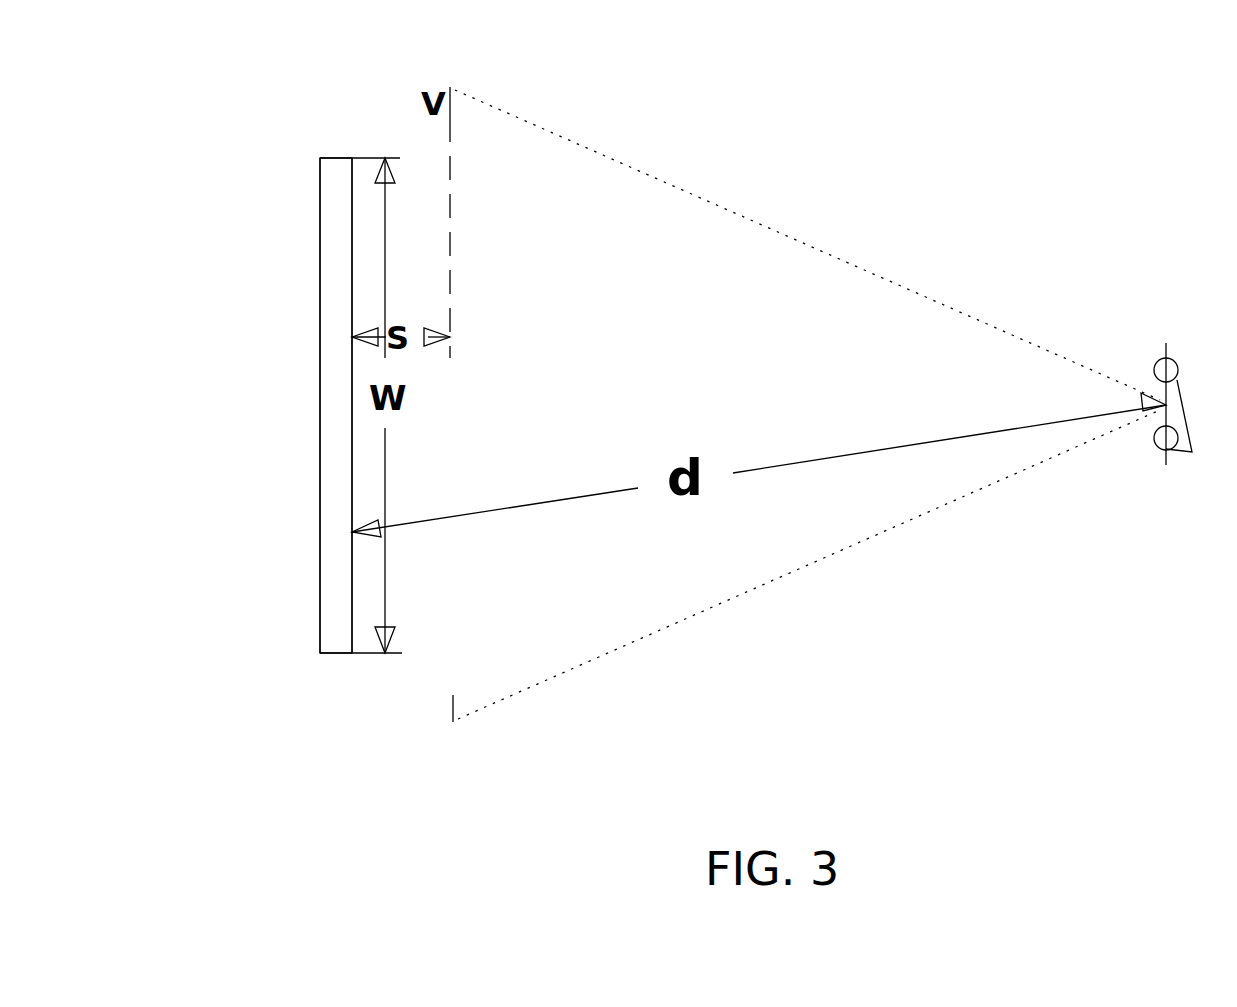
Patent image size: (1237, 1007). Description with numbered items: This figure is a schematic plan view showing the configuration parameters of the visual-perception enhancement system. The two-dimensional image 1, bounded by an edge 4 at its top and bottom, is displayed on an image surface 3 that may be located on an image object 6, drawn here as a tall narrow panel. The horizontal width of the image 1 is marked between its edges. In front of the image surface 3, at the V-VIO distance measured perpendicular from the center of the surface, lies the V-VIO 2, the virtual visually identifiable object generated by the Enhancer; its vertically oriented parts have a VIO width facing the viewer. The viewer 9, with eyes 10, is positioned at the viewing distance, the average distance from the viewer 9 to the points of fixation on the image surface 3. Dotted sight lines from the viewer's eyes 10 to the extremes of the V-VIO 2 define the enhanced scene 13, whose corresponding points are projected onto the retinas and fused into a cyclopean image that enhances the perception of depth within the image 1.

The 2D image 1 is at (352, 569).
The V-VIO 2 is at (450, 87).
The image surface 3 is at (352, 475).
The edge 4 is at (352, 158).
The image object 6 is at (320, 260).
The viewer 9 is at (1166, 343).
The eyes 10 is at (1201, 429).
The enhanced scene 13 is at (930, 300).